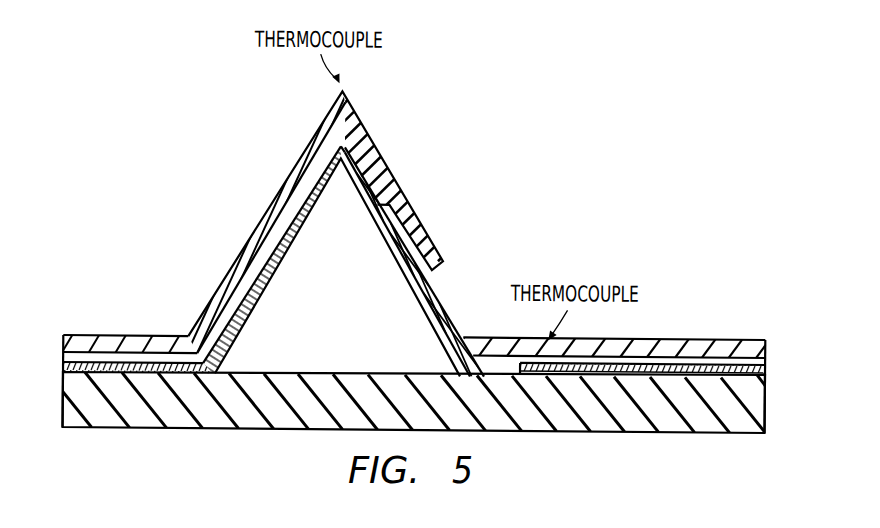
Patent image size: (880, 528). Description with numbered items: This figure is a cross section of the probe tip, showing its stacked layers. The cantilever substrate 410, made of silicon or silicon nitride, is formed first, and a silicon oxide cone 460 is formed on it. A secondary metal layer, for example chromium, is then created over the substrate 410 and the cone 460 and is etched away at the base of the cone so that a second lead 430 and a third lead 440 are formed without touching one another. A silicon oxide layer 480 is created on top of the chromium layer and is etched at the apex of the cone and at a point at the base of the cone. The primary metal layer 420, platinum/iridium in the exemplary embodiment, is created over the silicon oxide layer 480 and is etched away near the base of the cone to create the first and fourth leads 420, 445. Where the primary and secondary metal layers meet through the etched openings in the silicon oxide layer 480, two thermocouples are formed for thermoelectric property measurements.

The cantilever substrate 410 is at (153, 420).
The primary metal layer 420 is at (374, 158).
The second lead 430 is at (66, 368).
The third lead 440 is at (766, 365).
The fourth lead 445 is at (702, 331).
The silicon oxide cone 460 is at (357, 309).
The silicon oxide layer 480 is at (236, 280).